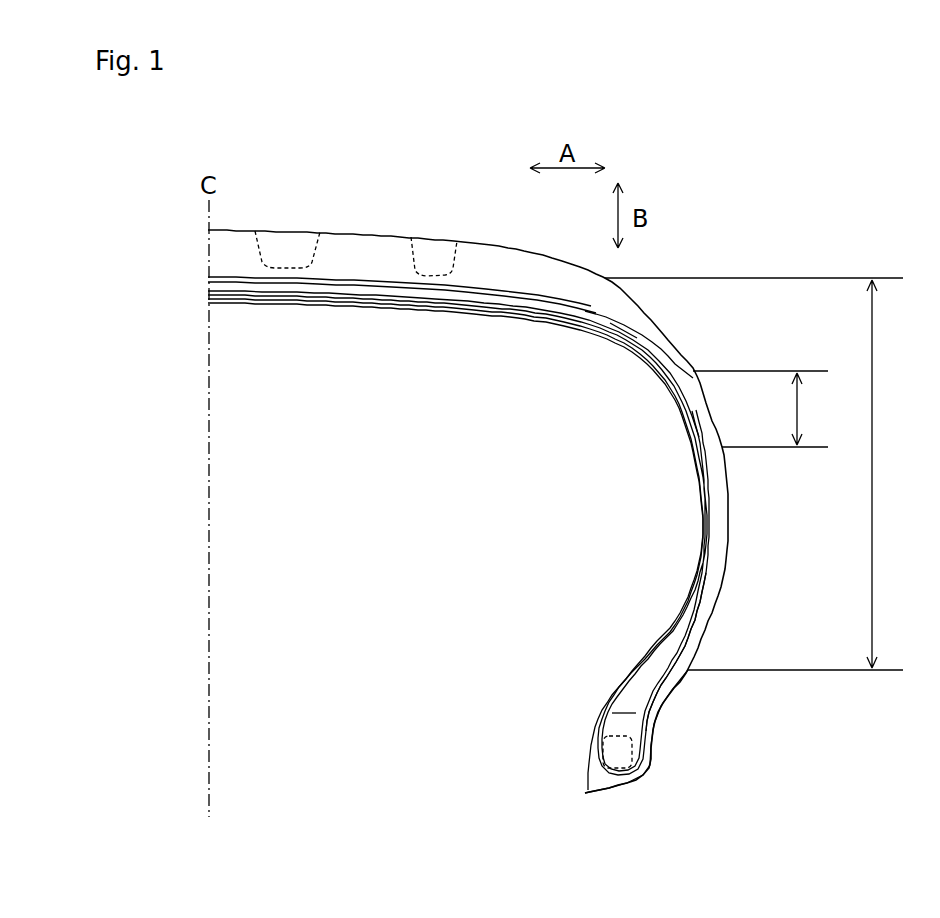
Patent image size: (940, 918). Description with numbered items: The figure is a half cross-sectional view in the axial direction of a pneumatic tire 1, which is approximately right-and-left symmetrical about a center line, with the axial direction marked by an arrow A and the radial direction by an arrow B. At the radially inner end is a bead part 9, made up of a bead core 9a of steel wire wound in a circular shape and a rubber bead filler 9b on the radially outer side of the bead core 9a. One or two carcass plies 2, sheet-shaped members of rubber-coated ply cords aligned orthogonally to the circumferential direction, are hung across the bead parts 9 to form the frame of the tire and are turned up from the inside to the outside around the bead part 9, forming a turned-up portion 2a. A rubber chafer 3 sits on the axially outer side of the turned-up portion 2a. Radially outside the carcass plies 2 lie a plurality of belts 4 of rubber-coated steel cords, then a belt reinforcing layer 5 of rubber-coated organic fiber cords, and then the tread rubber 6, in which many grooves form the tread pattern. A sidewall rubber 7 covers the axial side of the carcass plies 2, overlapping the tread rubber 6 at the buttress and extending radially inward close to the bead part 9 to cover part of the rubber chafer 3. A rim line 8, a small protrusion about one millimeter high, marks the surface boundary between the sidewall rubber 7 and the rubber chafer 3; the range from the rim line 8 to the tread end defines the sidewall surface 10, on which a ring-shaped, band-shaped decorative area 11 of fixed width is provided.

The pneumatic tire 1 is at (372, 543).
The carcass ply 2 is at (695, 450).
The turned-up portion 2a is at (700, 597).
The rubber chafer 3 is at (668, 670).
The belt 4 is at (433, 295).
The belt reinforcing layer 5 is at (330, 283).
The tread rubber 6 is at (352, 262).
The sidewall rubber 7 is at (690, 395).
The rim line 8 is at (688, 670).
The bead part 9 is at (516, 758).
The bead core 9a is at (612, 748).
The bead filler 9b is at (612, 713).
The sidewall surface 10 is at (757, 473).
The decorative area 11 is at (764, 409).